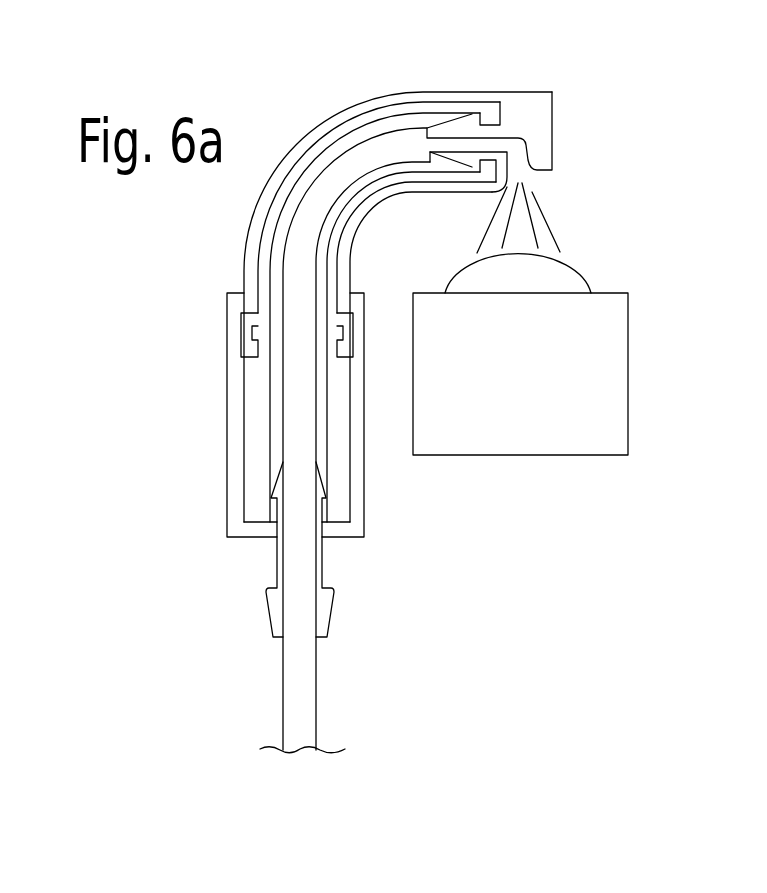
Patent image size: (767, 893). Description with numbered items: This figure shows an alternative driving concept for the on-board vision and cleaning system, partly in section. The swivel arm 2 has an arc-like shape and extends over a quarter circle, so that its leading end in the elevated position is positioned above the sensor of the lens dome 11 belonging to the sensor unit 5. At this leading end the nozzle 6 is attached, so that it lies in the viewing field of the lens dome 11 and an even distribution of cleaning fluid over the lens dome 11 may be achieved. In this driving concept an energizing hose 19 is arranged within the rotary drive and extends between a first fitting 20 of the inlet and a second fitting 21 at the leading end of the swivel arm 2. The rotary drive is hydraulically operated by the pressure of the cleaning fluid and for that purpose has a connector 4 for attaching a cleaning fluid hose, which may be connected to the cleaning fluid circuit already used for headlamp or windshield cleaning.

The swivel arm 2 is at (307, 134).
The second fitting 21 is at (462, 128).
The nozzle 6 is at (528, 183).
The lens dome 11 is at (563, 278).
The sensor unit 5 is at (650, 300).
The energizing hose 19 is at (295, 418).
The first fitting 20 is at (327, 486).
The connector 4 is at (330, 610).